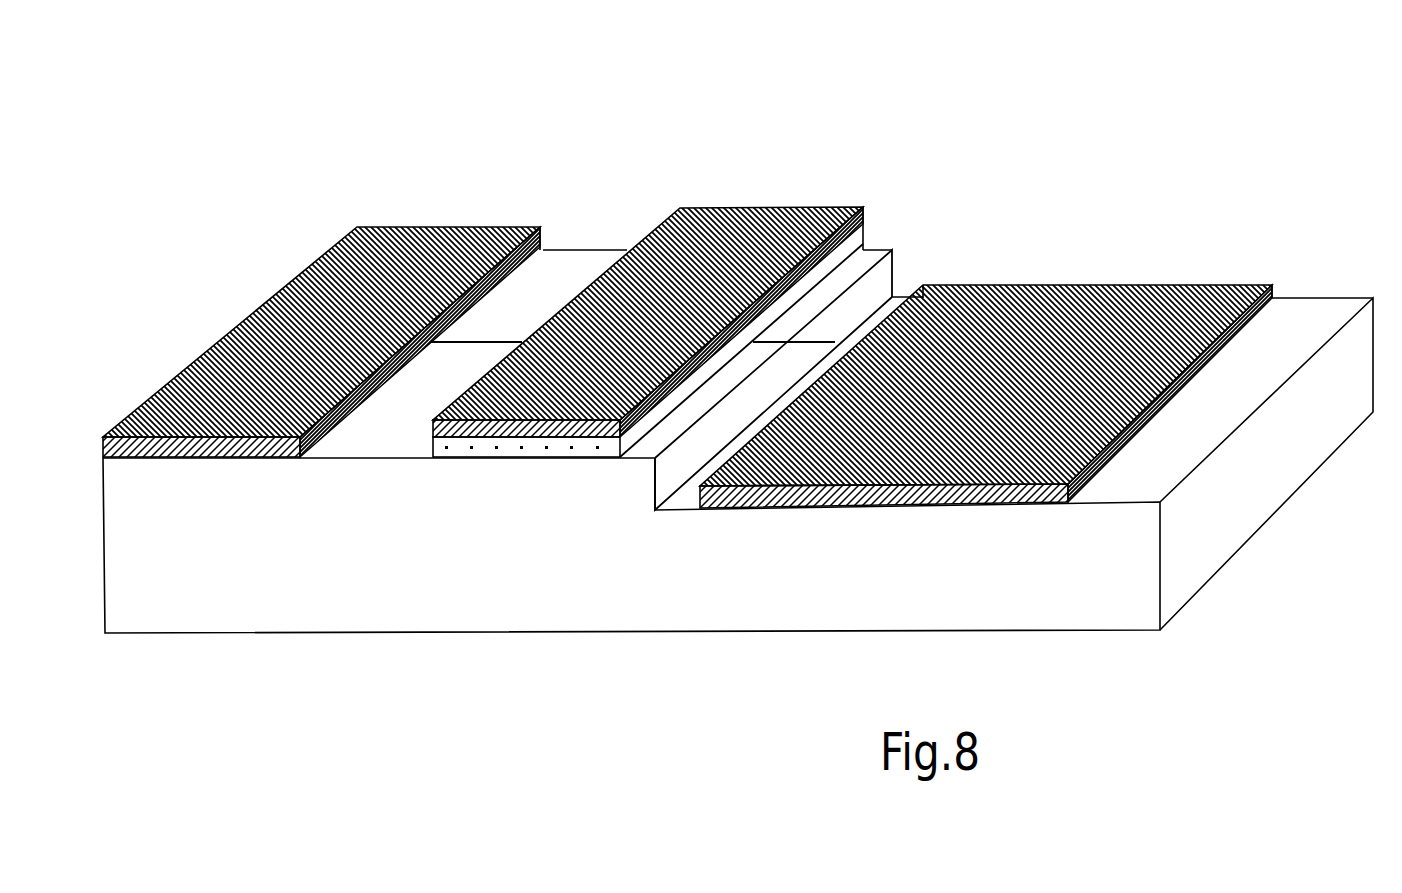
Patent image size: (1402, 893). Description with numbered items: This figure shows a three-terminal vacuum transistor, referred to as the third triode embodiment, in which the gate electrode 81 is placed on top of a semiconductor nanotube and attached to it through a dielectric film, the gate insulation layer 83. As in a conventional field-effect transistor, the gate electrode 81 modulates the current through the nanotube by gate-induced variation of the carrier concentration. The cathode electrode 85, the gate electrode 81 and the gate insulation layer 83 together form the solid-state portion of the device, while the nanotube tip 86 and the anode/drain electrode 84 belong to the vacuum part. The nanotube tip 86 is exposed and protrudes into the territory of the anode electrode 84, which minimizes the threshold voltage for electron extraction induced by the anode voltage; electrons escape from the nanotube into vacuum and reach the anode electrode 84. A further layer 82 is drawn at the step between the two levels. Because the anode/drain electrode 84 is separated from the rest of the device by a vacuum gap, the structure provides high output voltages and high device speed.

The gate electrode 81 is at (720, 208).
The step edge layer 82 is at (895, 252).
The gate insulation layer 83 is at (840, 258).
The anode/drain electrode 84 is at (1183, 268).
The cathode electrode 85 is at (440, 203).
The nanotube tip 86 is at (895, 278).